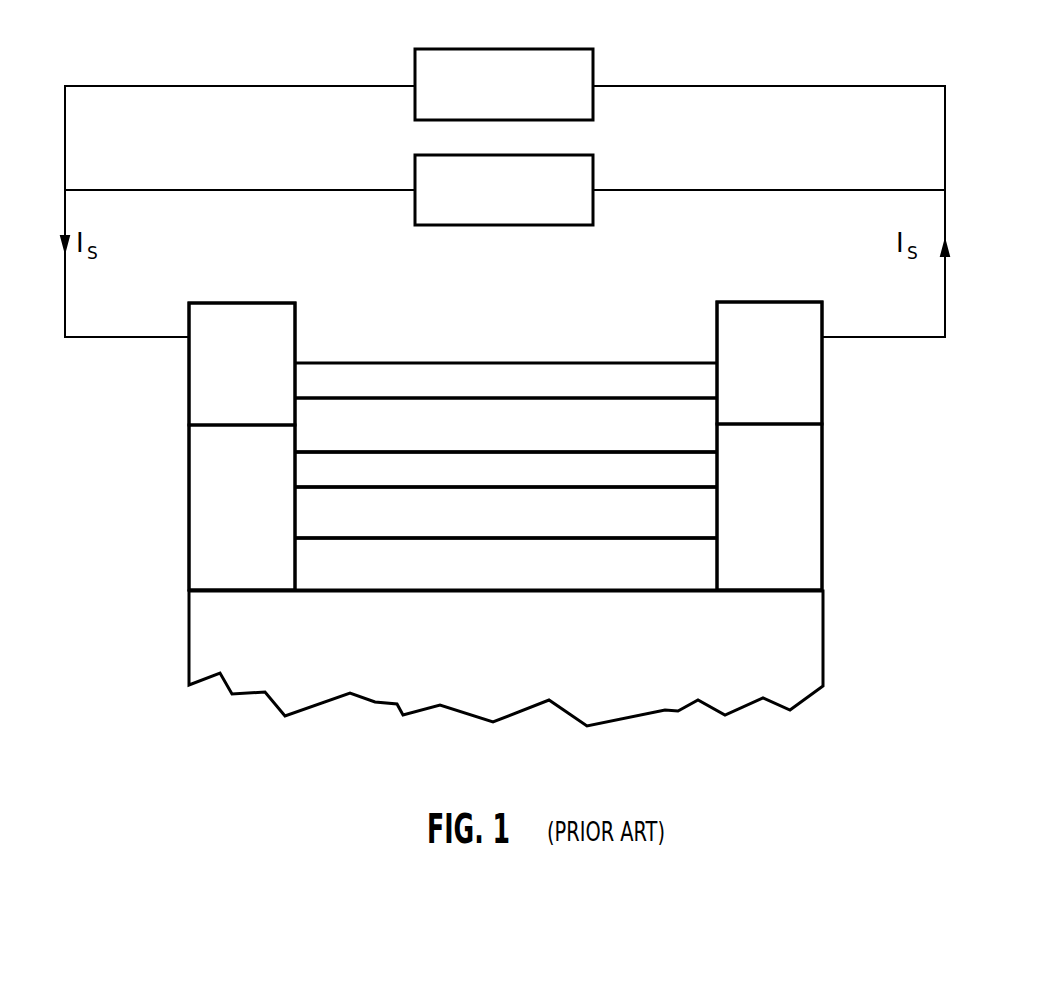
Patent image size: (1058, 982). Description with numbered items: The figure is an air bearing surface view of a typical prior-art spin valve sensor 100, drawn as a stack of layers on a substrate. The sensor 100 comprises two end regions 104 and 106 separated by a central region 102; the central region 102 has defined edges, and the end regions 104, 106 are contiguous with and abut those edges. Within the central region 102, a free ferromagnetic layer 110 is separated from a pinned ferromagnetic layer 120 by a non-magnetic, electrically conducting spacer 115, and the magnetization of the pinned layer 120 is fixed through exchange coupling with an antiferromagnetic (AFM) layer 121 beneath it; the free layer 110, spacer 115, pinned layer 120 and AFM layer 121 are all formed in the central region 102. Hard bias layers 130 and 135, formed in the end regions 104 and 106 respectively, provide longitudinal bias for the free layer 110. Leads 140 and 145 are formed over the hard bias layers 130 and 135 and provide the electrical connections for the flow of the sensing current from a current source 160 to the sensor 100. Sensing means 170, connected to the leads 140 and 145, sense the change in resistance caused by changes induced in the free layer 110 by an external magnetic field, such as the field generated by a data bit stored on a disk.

The SV sensor 100 is at (786, 736).
The central region 102 is at (302, 292).
The end region 104 is at (188, 297).
The end region 106 is at (716, 297).
The free layer 110 is at (690, 432).
The spacer 115 is at (690, 472).
The pinned layer 120 is at (690, 510).
The antiferromagnetic (AFM) layer 121 is at (698, 563).
The hard bias layer 130 is at (187, 488).
The hard bias layer 135 is at (807, 493).
The lead 140 is at (188, 402).
The lead 145 is at (807, 377).
The current source 160 is at (595, 163).
The sensing means 170 is at (595, 60).